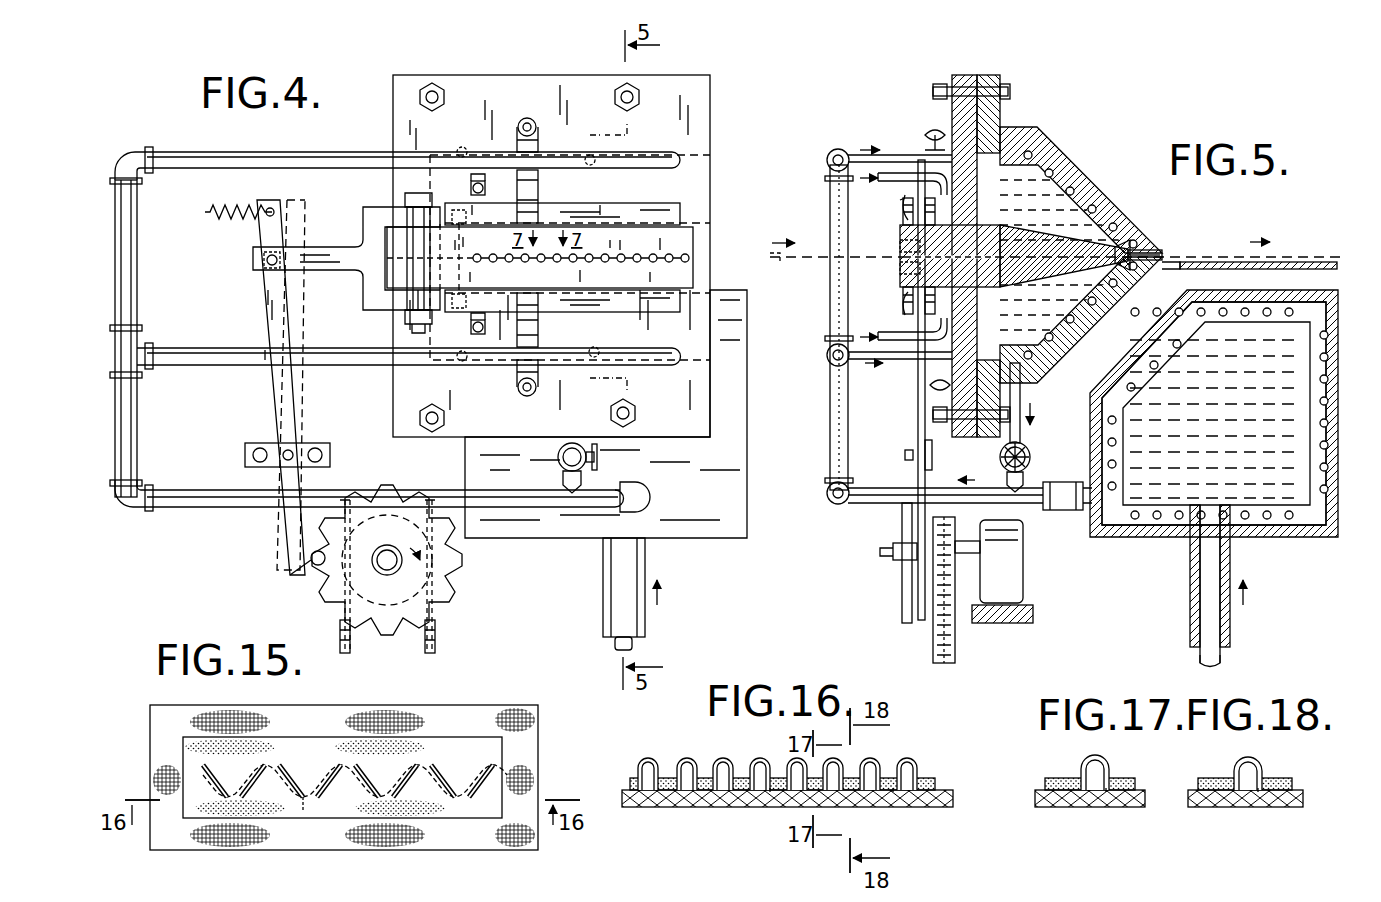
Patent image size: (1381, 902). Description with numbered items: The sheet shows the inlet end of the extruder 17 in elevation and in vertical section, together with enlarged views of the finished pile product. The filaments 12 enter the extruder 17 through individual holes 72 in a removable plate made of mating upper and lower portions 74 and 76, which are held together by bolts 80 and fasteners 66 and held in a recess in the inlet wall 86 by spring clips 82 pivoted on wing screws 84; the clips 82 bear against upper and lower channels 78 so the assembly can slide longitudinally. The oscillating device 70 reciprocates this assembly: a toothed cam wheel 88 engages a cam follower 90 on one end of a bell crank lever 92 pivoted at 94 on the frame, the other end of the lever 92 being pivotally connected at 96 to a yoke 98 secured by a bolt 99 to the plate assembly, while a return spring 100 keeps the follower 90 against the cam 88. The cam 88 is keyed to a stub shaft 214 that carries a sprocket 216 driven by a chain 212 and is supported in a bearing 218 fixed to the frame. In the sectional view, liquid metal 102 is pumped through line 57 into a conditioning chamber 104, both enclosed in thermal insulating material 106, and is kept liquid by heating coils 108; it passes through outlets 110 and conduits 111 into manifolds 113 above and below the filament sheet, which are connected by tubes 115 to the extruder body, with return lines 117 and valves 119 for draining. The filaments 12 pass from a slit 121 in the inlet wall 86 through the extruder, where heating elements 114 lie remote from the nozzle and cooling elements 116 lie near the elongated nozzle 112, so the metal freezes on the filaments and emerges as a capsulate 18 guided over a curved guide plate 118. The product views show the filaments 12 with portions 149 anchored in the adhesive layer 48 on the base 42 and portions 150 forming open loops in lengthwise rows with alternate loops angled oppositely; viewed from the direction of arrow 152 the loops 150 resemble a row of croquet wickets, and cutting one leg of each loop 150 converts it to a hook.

In FIG. 5, the filaments 12 is at (783, 262).
In FIG. 15, the filaments 12 is at (355, 752).
In FIG. 16, the filaments 12 is at (675, 757).
In FIG. 17, the filaments 12 is at (1078, 760).
In FIG. 18, the filaments 12 is at (1230, 760).
In FIG. 5, the extruder 17 is at (1092, 176).
In FIG. 5, the capsulate 18 is at (1300, 257).
In FIG. 15, the base sheet 42 is at (150, 749).
In FIG. 16, the base sheet 42 is at (696, 808).
In FIG. 17, the base sheet 42 is at (1056, 808).
In FIG. 18, the base sheet 42 is at (1217, 808).
In FIG. 15, the adhesive layer 48 is at (463, 814).
In FIG. 16, the adhesive layer 48 is at (630, 782).
In FIG. 17, the adhesive layer 48 is at (1045, 781).
In FIG. 18, the adhesive layer 48 is at (1292, 781).
In FIG. 4, the line 57 is at (615, 645).
In FIG. 5, the line 57 is at (1205, 615).
In FIG. 4, the nut 66 is at (471, 188).
In FIG. 5, the nut 66 is at (905, 173).
In FIG. 4, the oscillating device 70 is at (258, 296).
In FIG. 4, the holes 72 is at (545, 262).
In FIG. 4, the upper plate portion 74 is at (569, 257).
In FIG. 5, the upper plate portion 74 is at (900, 230).
In FIG. 4, the lower plate portion 76 is at (693, 270).
In FIG. 4, the channels 78 is at (664, 204).
In FIG. 5, the channels 78 is at (903, 208).
In FIG. 4, the bolts 80 is at (466, 276).
In FIG. 5, the bolts 80 is at (900, 243).
In FIG. 4, the spring clips 82 is at (538, 184).
In FIG. 5, the spring clips 82 is at (902, 198).
In FIG. 4, the wing screws 84 is at (540, 110).
In FIG. 5, the wing screws 84 is at (930, 133).
In FIG. 4, the inlet wall 86 is at (393, 117).
In FIG. 5, the inlet wall 86 is at (1005, 150).
In FIG. 4, the toothed cam wheel 88 is at (379, 560).
In FIG. 5, the toothed cam wheel 88 is at (902, 586).
In FIG. 4, the cam follower 90 is at (312, 562).
In FIG. 5, the cam follower 90 is at (890, 548).
In FIG. 4, the bell crank lever 92 is at (272, 392).
In FIG. 5, the bell crank lever 92 is at (918, 165).
In FIG. 4, the pivot 94 is at (294, 451).
In FIG. 5, the pivot 94 is at (905, 455).
In FIG. 4, the pivotal connection 96 is at (266, 261).
In FIG. 4, the yoke 98 is at (330, 250).
In FIG. 5, the yoke 98 is at (900, 268).
In FIG. 4, the bolt 99 is at (405, 197).
In FIG. 4, the return spring 100 is at (205, 212).
In FIG. 5, the metal 102 is at (1283, 487).
In FIG. 5, the conditioning chamber 104 is at (1195, 443).
In FIG. 4, the thermal insulating material 106 is at (610, 585).
In FIG. 5, the thermal insulating material 106 is at (1190, 525).
In FIG. 5, the heating coils 108 is at (1100, 440).
In FIG. 4, the outlets 110 is at (643, 492).
In FIG. 5, the outlets 110 is at (1088, 500).
In FIG. 4, the conduits 111 is at (115, 244).
In FIG. 5, the conduits 111 is at (830, 300).
In FIG. 5, the nozzle 112 is at (1162, 252).
In FIG. 4, the manifolds 113 is at (215, 153).
In FIG. 5, the manifolds 113 is at (828, 156).
In FIG. 5, the heating elements 114 is at (1080, 165).
In FIG. 4, the tubes 115 is at (461, 151).
In FIG. 5, the tubes 115 is at (860, 156).
In FIG. 5, the cooling elements 116 is at (1132, 240).
In FIG. 4, the return lines 117 is at (575, 488).
In FIG. 5, the return lines 117 is at (1020, 397).
In FIG. 5, the guide plate 118 is at (1185, 270).
In FIG. 4, the valves 119 is at (560, 447).
In FIG. 5, the valves 119 is at (1000, 458).
In FIG. 5, the slit 121 is at (1105, 220).
In FIG. 15, the anchored portions 149 is at (305, 812).
In FIG. 16, the anchored portions 149 is at (768, 792).
In FIG. 17, the anchored portions 149 is at (1106, 792).
In FIG. 18, the anchored portions 149 is at (1258, 792).
In FIG. 15, the loops 150 is at (325, 780).
In FIG. 16, the loops 150 is at (878, 768).
In FIG. 17, the loops 150 is at (1107, 772).
In FIG. 18, the loops 150 is at (1260, 774).
In FIG. 15, the arrow 152 is at (205, 784).
In FIG. 16, the arrow 152 is at (922, 768).
In FIG. 4, the chain 212 is at (435, 638).
In FIG. 5, the chain 212 is at (955, 653).
In FIG. 4, the stub shaft 214 is at (375, 565).
In FIG. 5, the stub shaft 214 is at (980, 547).
In FIG. 4, the sprocket 216 is at (438, 608).
In FIG. 5, the sprocket 216 is at (933, 620).
In FIG. 5, the bearing 218 is at (1023, 569).